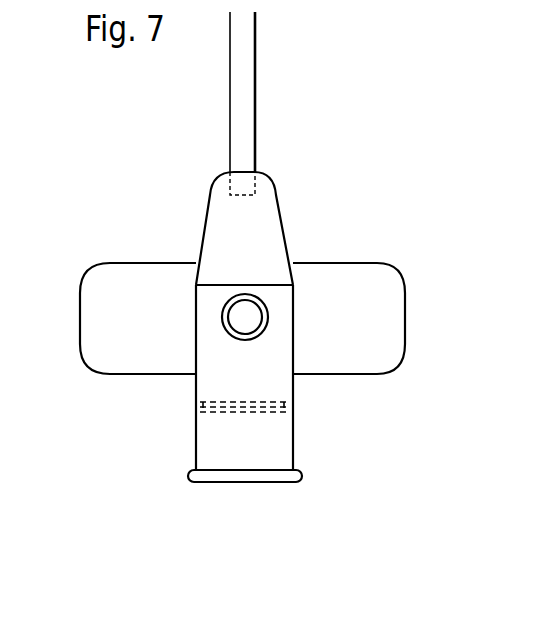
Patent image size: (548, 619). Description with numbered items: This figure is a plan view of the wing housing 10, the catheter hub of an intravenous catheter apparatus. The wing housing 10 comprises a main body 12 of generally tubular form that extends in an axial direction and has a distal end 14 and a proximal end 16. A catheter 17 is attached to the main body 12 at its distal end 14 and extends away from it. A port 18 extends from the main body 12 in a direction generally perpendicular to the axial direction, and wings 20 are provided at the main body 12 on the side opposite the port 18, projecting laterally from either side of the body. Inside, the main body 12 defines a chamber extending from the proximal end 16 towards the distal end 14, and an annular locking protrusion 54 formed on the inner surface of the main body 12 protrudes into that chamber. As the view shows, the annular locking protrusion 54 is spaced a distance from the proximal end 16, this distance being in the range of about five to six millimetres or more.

The wing housing 10 is at (183, 407).
The main body 12 is at (267, 225).
The distal end 14 is at (247, 168).
The proximal end 16 is at (247, 482).
The catheter 17 is at (242, 57).
The port 18 is at (221, 320).
The wings 20 is at (102, 286).
The annular locking protrusion 54 is at (247, 410).